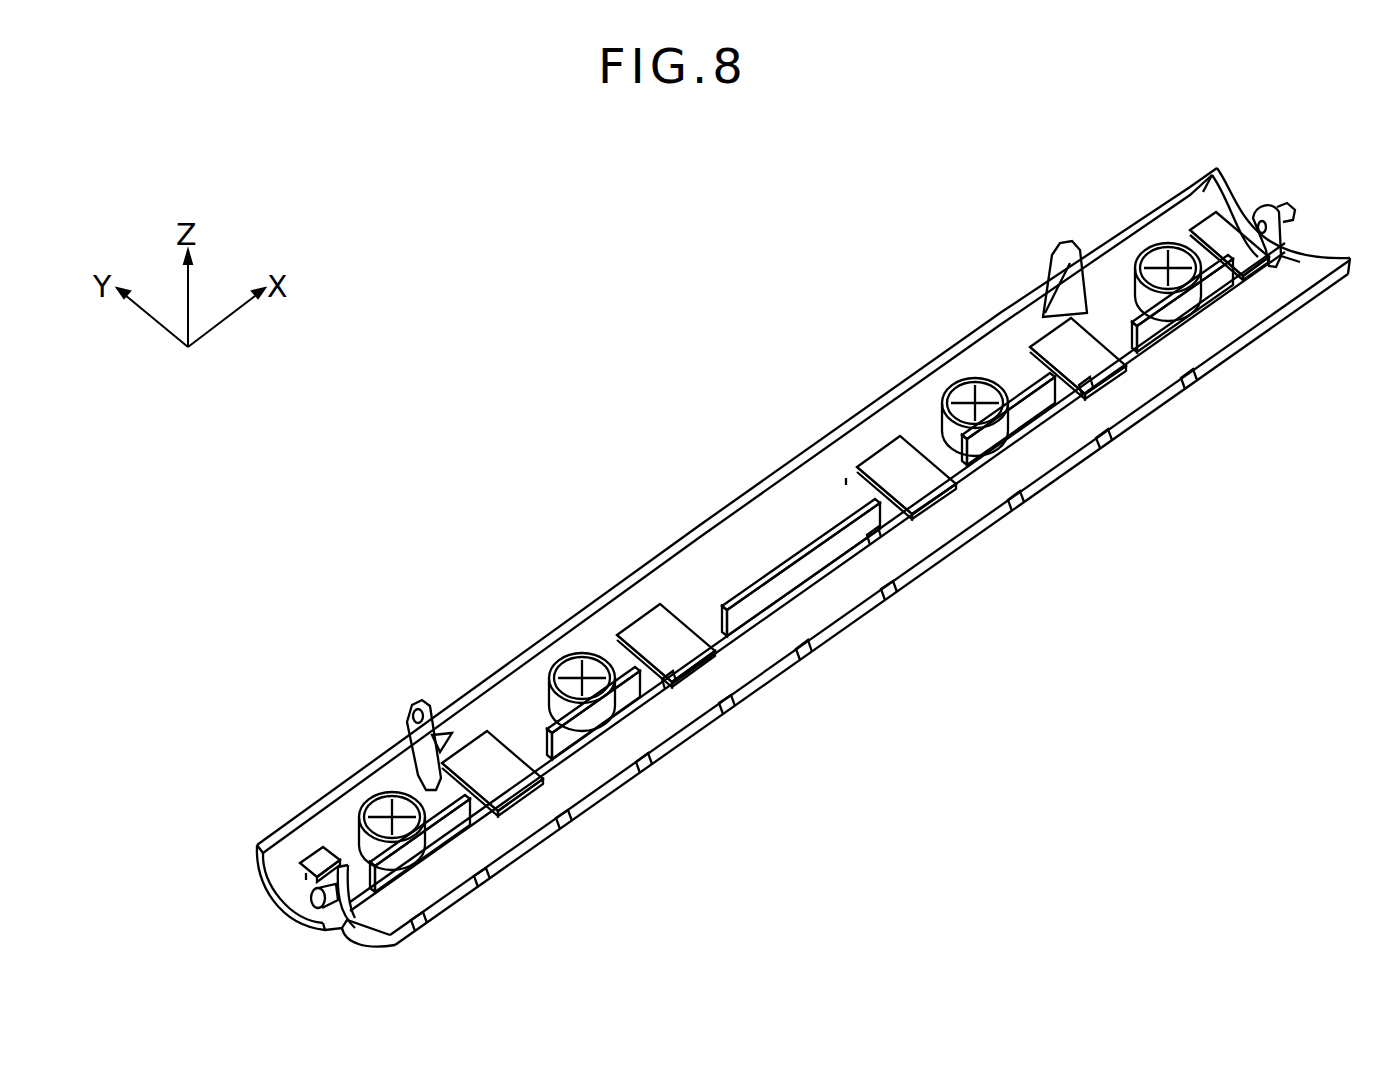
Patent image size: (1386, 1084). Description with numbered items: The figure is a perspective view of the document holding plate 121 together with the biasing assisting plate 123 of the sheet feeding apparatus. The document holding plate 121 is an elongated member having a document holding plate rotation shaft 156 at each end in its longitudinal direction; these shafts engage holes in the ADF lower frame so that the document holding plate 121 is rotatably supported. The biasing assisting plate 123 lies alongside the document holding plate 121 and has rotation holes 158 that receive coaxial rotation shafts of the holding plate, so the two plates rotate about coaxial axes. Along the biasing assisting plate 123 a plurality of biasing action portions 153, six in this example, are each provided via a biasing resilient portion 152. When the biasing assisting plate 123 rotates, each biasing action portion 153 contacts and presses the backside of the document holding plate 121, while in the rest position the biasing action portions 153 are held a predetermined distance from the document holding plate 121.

The document holding plate 121 is at (257, 845).
The biasing assisting plate 123 is at (833, 590).
The biasing resilient portion 152 is at (1213, 225).
The biasing action portion 153 is at (1183, 238).
The document holding plate rotation shaft 156 is at (1295, 206).
The rotation hole 158 is at (1265, 222).